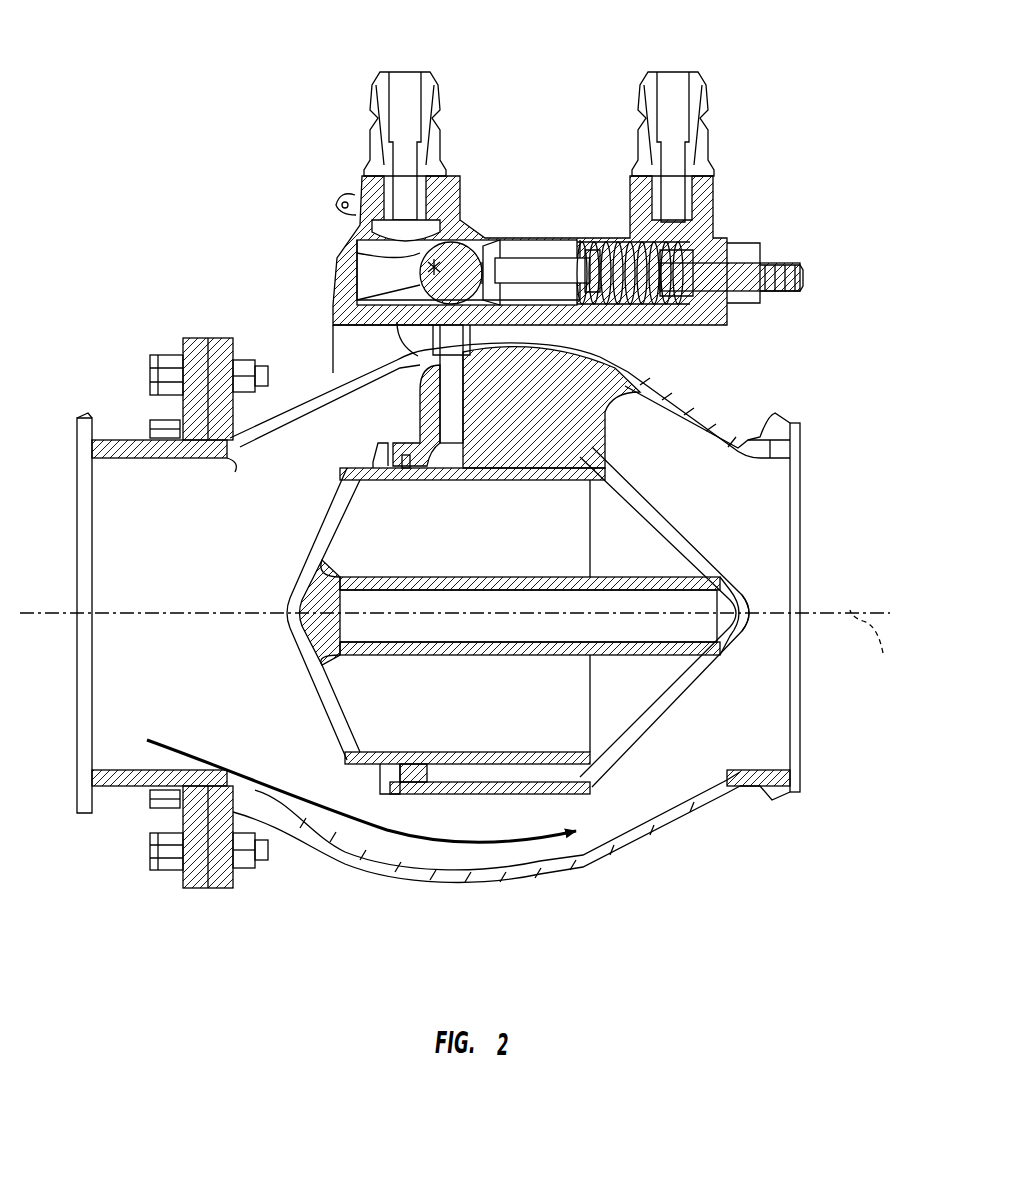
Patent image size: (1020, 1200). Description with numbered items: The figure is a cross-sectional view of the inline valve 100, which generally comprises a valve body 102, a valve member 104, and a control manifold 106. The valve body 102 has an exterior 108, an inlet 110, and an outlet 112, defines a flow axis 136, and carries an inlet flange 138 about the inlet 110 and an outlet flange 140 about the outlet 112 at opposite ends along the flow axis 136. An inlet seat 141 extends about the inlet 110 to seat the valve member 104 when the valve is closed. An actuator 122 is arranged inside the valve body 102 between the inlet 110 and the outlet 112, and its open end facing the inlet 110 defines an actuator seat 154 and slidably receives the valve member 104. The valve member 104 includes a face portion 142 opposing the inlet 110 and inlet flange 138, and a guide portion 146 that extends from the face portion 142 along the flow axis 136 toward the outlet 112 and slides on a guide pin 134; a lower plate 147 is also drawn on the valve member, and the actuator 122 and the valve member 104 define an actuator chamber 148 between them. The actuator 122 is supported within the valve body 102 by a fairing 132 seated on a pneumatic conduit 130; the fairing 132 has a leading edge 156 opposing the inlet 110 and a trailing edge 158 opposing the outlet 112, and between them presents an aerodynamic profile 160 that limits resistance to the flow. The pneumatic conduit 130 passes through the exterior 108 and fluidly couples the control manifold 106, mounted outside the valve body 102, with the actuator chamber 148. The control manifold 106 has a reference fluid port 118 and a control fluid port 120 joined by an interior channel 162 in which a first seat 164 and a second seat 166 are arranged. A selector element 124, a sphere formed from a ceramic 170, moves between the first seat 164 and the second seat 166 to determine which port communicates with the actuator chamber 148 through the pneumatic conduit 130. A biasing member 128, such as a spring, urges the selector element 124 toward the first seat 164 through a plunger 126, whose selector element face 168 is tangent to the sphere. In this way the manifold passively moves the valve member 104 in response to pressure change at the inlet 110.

The inline valve 100 is at (123, 932).
The valve body 102 is at (557, 899).
The valve member 104 is at (291, 658).
The control manifold 106 is at (560, 166).
The exterior 108 is at (290, 412).
The inlet 110 is at (156, 653).
The outlet 112 is at (755, 533).
The reference fluid port 118 is at (668, 62).
The control fluid port 120 is at (396, 66).
The actuator 122 is at (658, 488).
The selector element 124 is at (433, 258).
The plunger 126 is at (598, 243).
The biasing member 128 is at (657, 258).
The pneumatic conduit 130 is at (418, 404).
The fairing 132 is at (605, 368).
The guide pin 134 is at (543, 588).
The flow axis 136 is at (876, 650).
The inlet flange 138 is at (93, 435).
The outlet flange 140 is at (784, 432).
The inlet seat 141 is at (233, 460).
The face portion 142 is at (300, 596).
The guide portion 146 is at (500, 582).
The lower plate 147 is at (477, 755).
The actuator chamber 148 is at (391, 548).
The actuator seat 154 is at (394, 499).
The leading edge 156 is at (408, 378).
The trailing edge 158 is at (607, 407).
The aerodynamic profile 160 is at (536, 429).
The interior channel 162 is at (541, 240).
The first seat 164 is at (420, 266).
The second seat 166 is at (418, 285).
The selector element face 168 is at (454, 262).
The ceramic 170 is at (428, 266).